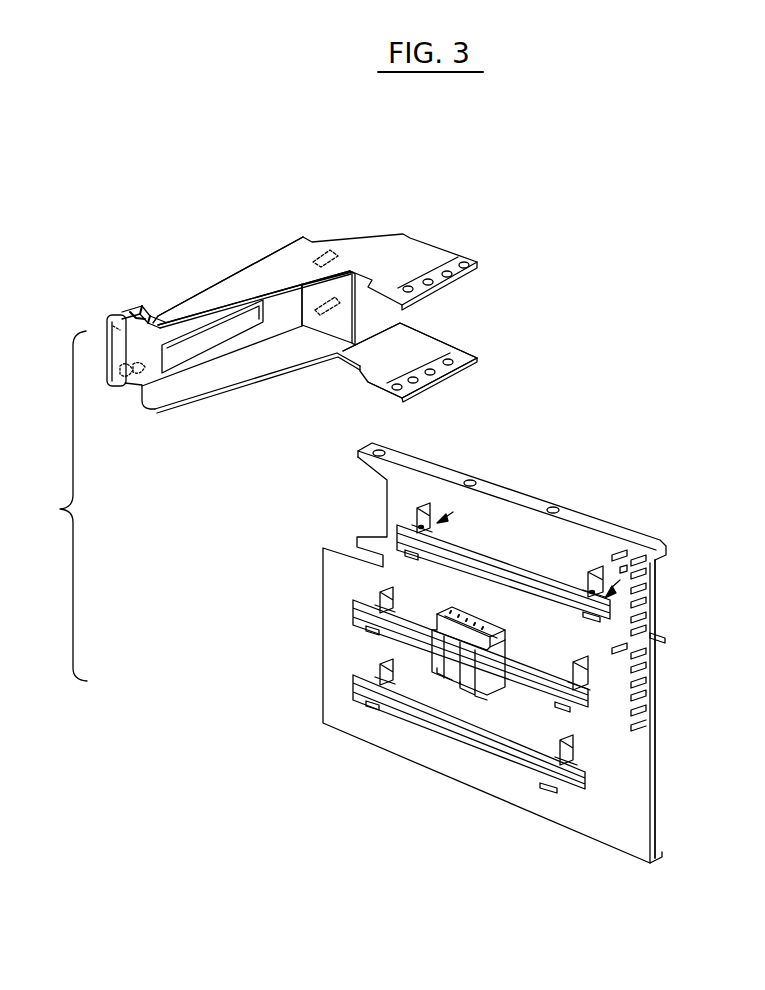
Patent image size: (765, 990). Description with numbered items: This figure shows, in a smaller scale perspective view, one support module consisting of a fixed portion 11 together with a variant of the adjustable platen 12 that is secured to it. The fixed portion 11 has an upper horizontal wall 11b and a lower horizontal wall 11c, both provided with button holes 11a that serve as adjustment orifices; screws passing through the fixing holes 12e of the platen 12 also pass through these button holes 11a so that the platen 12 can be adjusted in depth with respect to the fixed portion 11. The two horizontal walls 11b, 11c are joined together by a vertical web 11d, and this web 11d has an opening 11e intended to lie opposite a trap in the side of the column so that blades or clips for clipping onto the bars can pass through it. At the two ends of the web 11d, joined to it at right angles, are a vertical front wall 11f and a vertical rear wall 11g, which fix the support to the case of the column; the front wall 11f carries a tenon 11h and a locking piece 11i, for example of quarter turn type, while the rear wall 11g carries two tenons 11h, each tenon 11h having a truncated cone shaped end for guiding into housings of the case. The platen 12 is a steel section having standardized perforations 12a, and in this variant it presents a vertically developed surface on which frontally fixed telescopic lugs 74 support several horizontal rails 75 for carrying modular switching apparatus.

The fixed portion 11 is at (228, 240).
The button holes 11a is at (438, 272).
The upper horizontal wall 11b is at (272, 289).
The lower horizontal wall 11c is at (408, 363).
The vertical web 11d is at (277, 312).
The opening 11e is at (197, 337).
The front wall 11f is at (115, 350).
The rear wall 11g is at (338, 323).
The tenon 11h is at (131, 310).
The locking piece 11i is at (100, 376).
The platen 12 is at (495, 517).
The standardized perforations 12a is at (633, 562).
The fixing holes 12e is at (385, 451).
The telescopic lugs 74 is at (427, 488).
The horizontal rails 75 is at (536, 602).